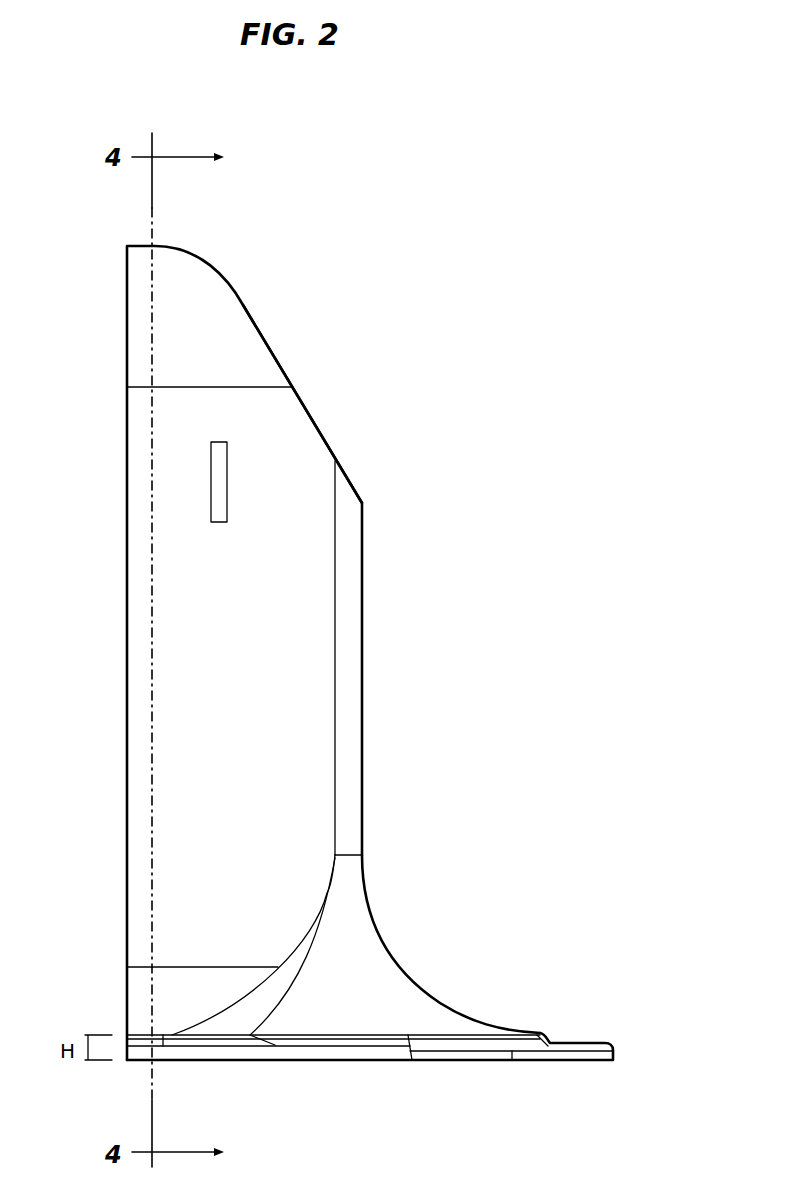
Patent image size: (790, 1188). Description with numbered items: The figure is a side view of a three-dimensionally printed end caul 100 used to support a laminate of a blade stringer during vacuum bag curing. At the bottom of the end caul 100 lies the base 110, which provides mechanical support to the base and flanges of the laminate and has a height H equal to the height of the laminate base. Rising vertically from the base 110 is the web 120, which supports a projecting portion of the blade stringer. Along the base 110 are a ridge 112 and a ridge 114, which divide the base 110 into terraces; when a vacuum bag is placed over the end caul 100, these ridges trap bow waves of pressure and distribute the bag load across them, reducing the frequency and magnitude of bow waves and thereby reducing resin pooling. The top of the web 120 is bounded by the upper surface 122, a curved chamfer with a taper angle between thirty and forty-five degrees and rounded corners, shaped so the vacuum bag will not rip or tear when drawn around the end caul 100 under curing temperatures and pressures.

The end caul 100 is at (562, 506).
The base 110 is at (587, 911).
The ridge 112 is at (542, 1032).
The ridge 114 is at (614, 1043).
The web 120 is at (422, 663).
The upper surface 122 is at (317, 425).